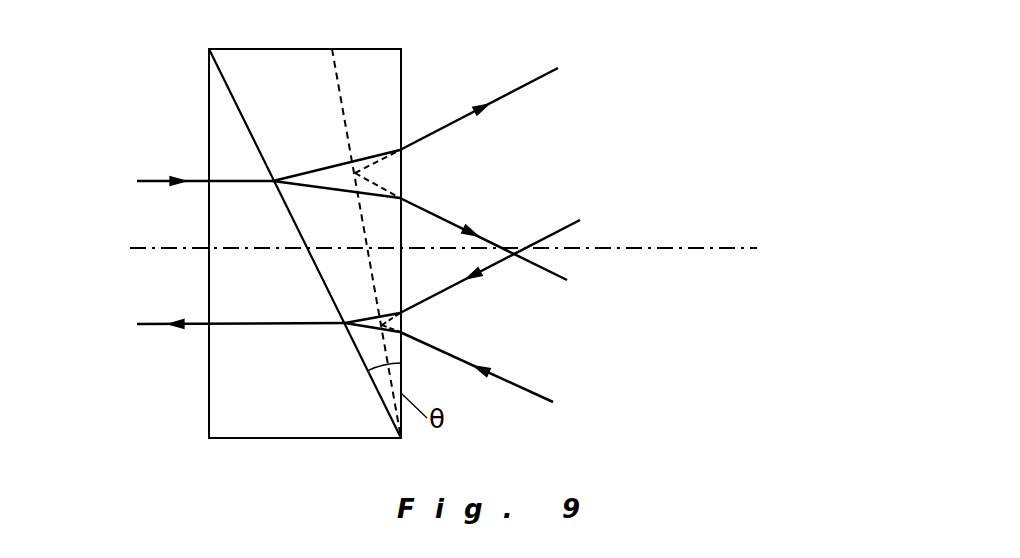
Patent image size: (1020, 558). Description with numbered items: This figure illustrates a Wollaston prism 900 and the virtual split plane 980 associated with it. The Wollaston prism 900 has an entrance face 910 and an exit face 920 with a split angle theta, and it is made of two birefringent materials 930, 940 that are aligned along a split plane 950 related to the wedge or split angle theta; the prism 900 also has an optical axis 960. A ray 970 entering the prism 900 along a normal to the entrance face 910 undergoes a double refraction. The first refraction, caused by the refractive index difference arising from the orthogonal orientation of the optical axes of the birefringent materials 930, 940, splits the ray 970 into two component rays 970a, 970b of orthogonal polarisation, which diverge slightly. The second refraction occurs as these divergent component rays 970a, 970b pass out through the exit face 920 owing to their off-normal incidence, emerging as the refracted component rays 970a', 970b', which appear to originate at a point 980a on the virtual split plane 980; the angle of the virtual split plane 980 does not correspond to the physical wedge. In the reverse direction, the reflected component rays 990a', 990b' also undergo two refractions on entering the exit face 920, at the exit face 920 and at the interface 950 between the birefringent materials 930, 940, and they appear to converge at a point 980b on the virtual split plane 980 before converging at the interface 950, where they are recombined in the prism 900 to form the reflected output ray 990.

The Wollaston prism 900 is at (425, 82).
The entrance face 910 is at (208, 83).
The exit face 920 is at (401, 117).
The birefringent material 930 is at (309, 379).
The birefringent material 940 is at (306, 128).
The split plane 950 is at (317, 270).
The optical axis 960 is at (647, 248).
The ray 970 is at (150, 177).
The component ray 970a is at (258, 140).
The component ray 970b is at (258, 209).
The refracted component ray 970a' is at (511, 109).
The refracted component ray 970b' is at (487, 225).
The virtual split plane 980 is at (340, 90).
The point 980a is at (360, 175).
The point 980b is at (383, 327).
The reflected output ray 990 is at (162, 328).
The reflected component ray 990a' is at (473, 273).
The reflected component ray 990b' is at (488, 362).